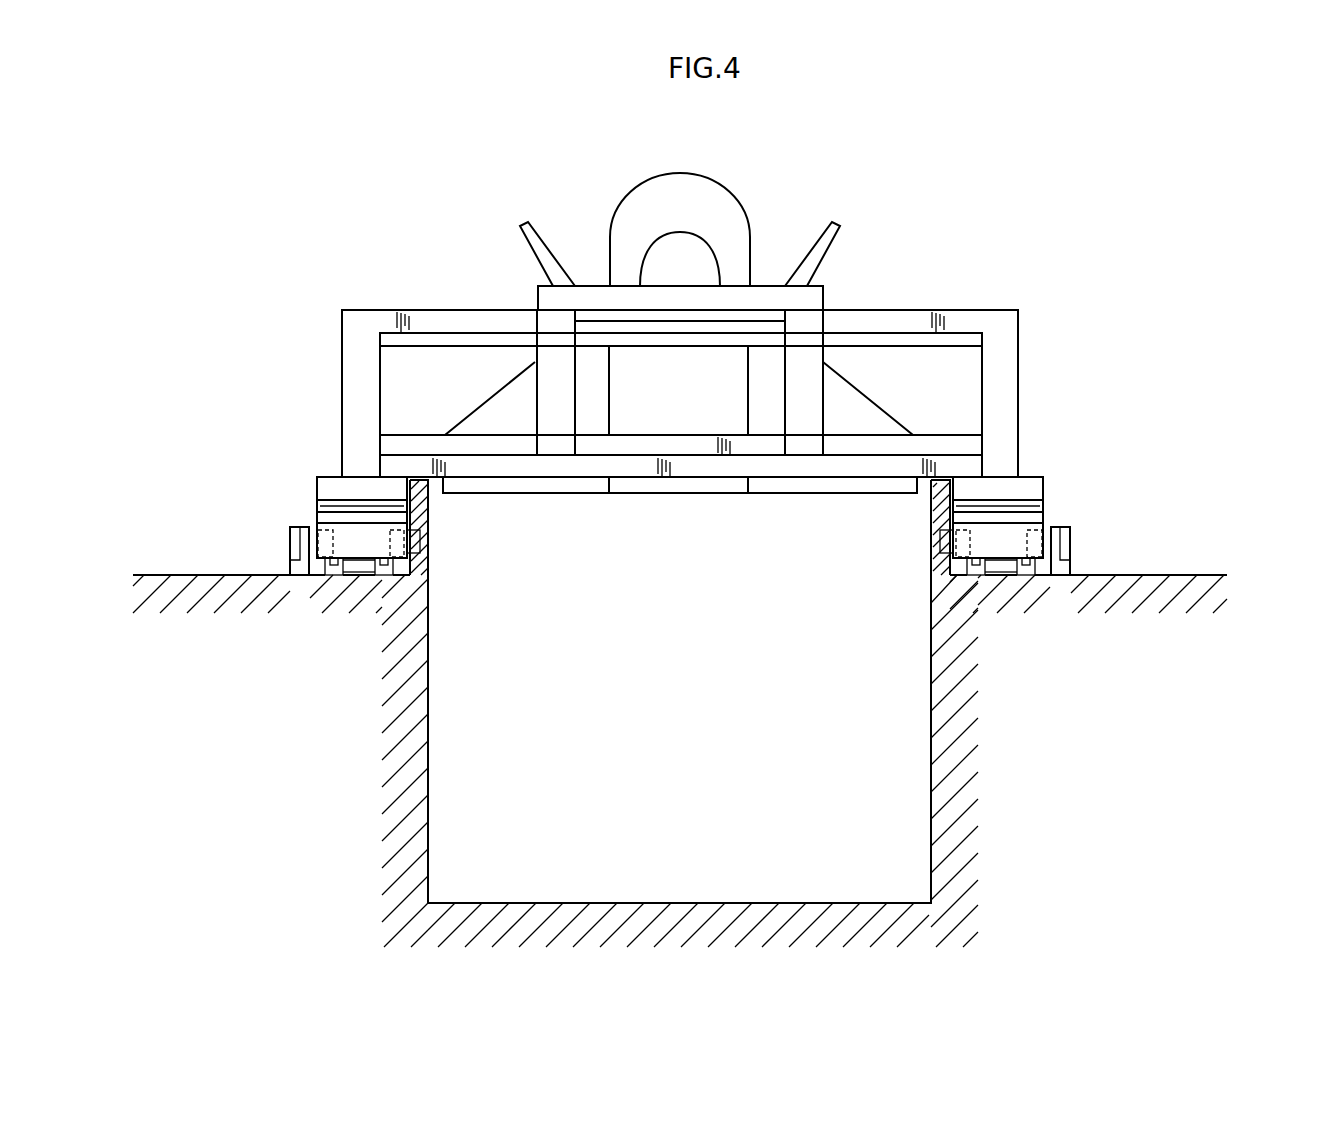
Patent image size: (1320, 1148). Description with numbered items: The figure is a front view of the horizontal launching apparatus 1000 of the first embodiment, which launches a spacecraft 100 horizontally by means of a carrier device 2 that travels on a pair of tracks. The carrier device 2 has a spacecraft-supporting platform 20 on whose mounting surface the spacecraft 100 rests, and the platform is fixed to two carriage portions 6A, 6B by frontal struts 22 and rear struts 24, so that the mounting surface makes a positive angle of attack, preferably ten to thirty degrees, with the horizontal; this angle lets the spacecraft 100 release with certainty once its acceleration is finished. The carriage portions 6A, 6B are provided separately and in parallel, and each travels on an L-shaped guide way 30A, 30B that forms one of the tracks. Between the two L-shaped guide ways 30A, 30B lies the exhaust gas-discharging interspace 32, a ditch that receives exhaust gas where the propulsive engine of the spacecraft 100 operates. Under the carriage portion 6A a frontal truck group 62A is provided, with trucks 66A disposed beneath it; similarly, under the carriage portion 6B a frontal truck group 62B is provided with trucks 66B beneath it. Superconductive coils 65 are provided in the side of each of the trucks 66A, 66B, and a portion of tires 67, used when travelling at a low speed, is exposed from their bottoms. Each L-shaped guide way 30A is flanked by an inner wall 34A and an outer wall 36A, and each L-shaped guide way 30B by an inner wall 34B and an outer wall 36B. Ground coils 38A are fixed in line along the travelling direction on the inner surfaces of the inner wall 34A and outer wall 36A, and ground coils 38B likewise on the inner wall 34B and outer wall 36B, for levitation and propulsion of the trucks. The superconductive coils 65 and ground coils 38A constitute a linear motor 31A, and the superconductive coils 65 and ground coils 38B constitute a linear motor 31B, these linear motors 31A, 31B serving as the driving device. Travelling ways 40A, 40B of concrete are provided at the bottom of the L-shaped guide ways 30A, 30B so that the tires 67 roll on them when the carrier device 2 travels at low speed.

The horizontal launching apparatus 1000 is at (1118, 340).
The carrier device 2 is at (1068, 412).
The spacecraft 100 is at (693, 190).
The spacecraft-supporting platform 20 is at (812, 298).
The frontal struts 22 is at (428, 318).
The rear struts 24 is at (687, 472).
The carriage portion 6A is at (1032, 492).
The carriage portion 6B is at (332, 486).
The frontal truck group 62A is at (1033, 518).
The frontal truck group 62B is at (326, 503).
The outer wall 36A is at (1035, 537).
The outer wall 36B is at (322, 516).
The inner wall 34A is at (960, 503).
The inner wall 34B is at (393, 505).
The ground coils 38A is at (962, 542).
The ground coils 38B is at (318, 540).
The superconductive coils 65 is at (322, 548).
The linear motor 31A is at (830, 530).
The linear motor 31B is at (203, 498).
The L-shaped guide way 30A is at (978, 578).
The L-shaped guide way 30B is at (362, 572).
The tires 67 is at (330, 578).
The trucks 66A is at (985, 570).
The trucks 66B is at (395, 565).
The travelling way 40A is at (935, 572).
The travelling way 40B is at (428, 550).
The exhaust gas-discharging interspace 32 is at (542, 903).